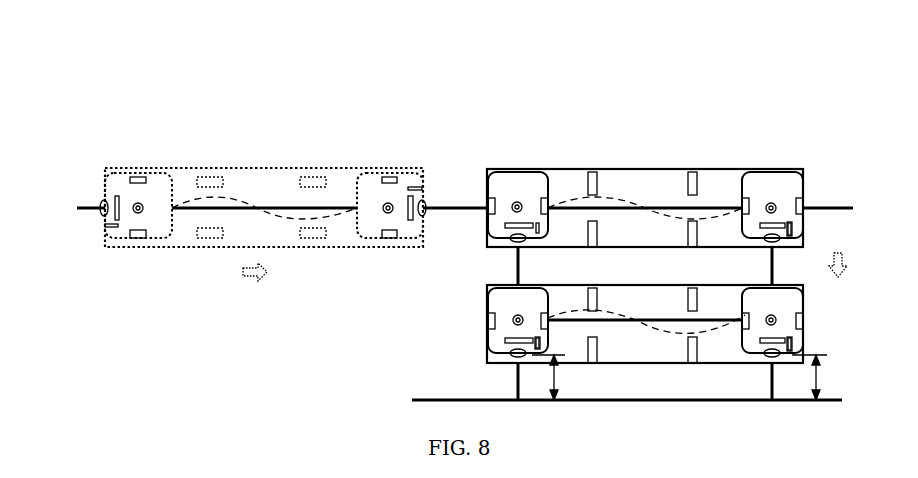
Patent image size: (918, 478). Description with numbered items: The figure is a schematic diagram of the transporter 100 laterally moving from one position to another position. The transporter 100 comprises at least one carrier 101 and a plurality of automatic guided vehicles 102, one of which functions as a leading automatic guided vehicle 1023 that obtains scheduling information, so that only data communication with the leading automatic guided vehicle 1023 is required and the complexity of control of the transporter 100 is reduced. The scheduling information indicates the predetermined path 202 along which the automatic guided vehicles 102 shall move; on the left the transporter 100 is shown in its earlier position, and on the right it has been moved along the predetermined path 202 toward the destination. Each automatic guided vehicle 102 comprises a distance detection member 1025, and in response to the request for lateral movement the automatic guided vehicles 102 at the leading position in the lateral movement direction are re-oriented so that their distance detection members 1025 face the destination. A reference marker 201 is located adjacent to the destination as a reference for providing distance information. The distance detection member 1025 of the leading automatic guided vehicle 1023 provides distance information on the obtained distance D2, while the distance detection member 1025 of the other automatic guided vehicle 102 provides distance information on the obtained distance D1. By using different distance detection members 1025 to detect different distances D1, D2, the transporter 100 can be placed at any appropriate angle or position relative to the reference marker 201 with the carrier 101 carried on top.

The transporter 100 is at (253, 92).
The carrier 101 is at (280, 175).
The automatic guided vehicle 102 is at (123, 190).
The leading automatic guided vehicle 1023 is at (368, 187).
The distance detection member 1025 is at (790, 233).
The reference marker 201 is at (433, 403).
The predetermined path 202 is at (472, 198).
The distance D1 is at (564, 377).
The distance D2 is at (822, 377).